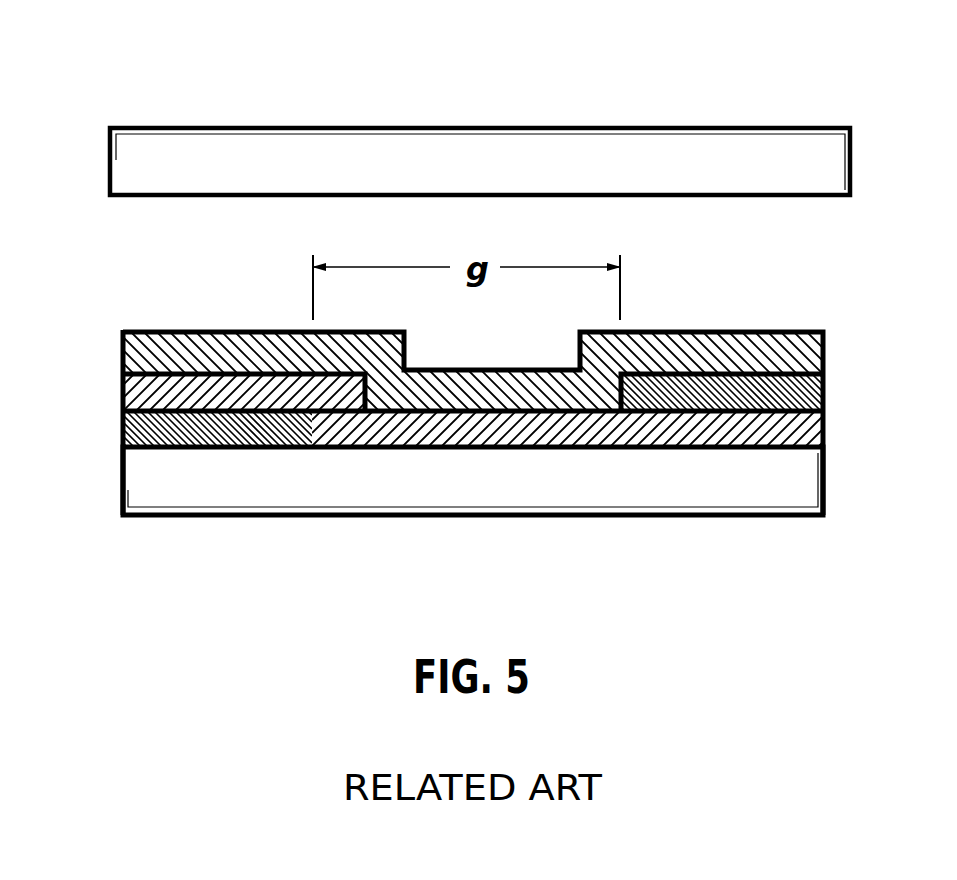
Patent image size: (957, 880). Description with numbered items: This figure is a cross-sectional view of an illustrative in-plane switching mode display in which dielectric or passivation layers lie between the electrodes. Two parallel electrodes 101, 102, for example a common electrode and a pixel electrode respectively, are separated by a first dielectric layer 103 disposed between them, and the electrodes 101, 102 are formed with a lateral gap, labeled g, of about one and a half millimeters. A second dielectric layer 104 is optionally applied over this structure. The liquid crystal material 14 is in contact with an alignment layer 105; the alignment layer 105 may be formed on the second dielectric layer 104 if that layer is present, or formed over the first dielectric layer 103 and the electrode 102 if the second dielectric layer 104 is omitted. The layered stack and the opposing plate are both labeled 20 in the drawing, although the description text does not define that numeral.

The liquid crystal material 14 is at (208, 268).
The substrate 20 is at (715, 136).
The electrode 101 is at (125, 432).
The electrode 102 is at (823, 392).
The first dielectric layer 103 is at (823, 430).
The second dielectric layer 104 is at (823, 342).
The alignment layer 105 is at (850, 190).